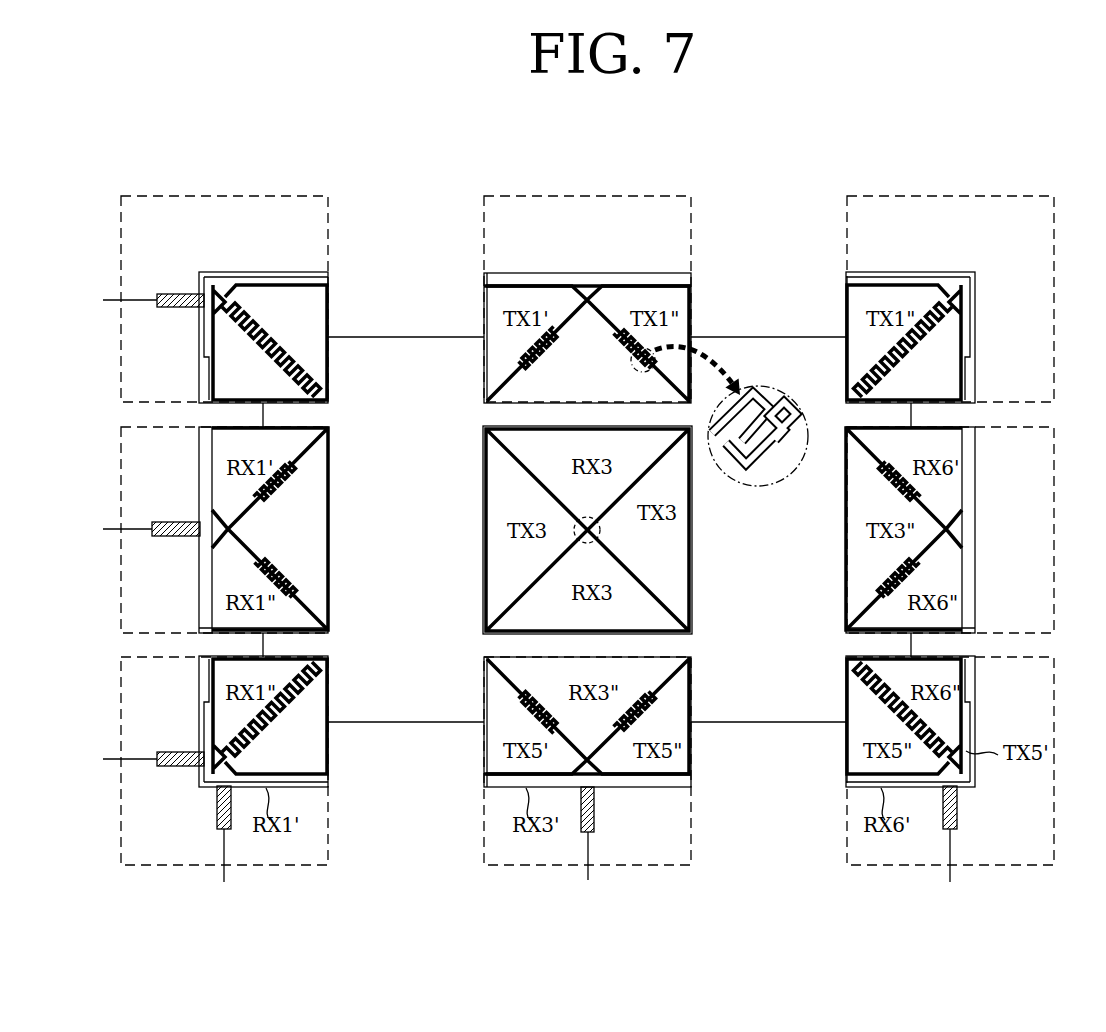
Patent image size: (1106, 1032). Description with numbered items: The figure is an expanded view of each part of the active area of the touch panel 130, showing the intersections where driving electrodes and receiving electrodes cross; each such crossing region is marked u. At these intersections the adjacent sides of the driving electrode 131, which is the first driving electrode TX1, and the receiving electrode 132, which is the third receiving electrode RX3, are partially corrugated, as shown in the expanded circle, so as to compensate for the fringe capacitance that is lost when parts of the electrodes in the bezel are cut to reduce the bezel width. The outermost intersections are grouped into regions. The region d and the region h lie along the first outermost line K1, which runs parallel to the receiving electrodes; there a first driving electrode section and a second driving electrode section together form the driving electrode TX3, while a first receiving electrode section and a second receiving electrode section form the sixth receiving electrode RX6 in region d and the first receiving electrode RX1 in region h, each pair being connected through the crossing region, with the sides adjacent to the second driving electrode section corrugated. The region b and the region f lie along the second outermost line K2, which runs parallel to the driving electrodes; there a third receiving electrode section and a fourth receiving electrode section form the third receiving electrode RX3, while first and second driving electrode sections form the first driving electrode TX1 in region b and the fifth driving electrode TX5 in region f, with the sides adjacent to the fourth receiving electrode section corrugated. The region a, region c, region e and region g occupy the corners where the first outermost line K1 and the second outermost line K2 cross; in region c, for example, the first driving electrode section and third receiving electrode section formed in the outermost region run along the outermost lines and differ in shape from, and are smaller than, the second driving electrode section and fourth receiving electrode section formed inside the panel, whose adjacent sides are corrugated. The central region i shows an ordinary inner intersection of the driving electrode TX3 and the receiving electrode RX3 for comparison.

The touch panel 130 is at (770, 337).
The driving electrode 131 is at (493, 316).
The receiving electrode 132 is at (537, 280).
The 'a' region a is at (328, 233).
The 'b' region b is at (575, 299).
The 'c' region c is at (1054, 238).
The 'd' region d is at (1054, 483).
The 'e' region e is at (1054, 712).
The 'f' region f is at (691, 827).
The 'g' region g is at (121, 808).
The 'h' region h is at (121, 577).
The center sensing cell i is at (483, 465).
The crossing region u is at (596, 522).
The first outermost line K1 is at (268, 652).
The second outermost line K2 is at (364, 337).
The first driving electrode TX1 is at (133, 300).
The first driving electrode TX3 is at (131, 529).
The fifth driving electrode TX5 is at (133, 759).
The first receiving electrode RX1 is at (224, 849).
The third receiving electrode RX3 is at (588, 850).
The sixth receiving electrode RX6 is at (950, 849).